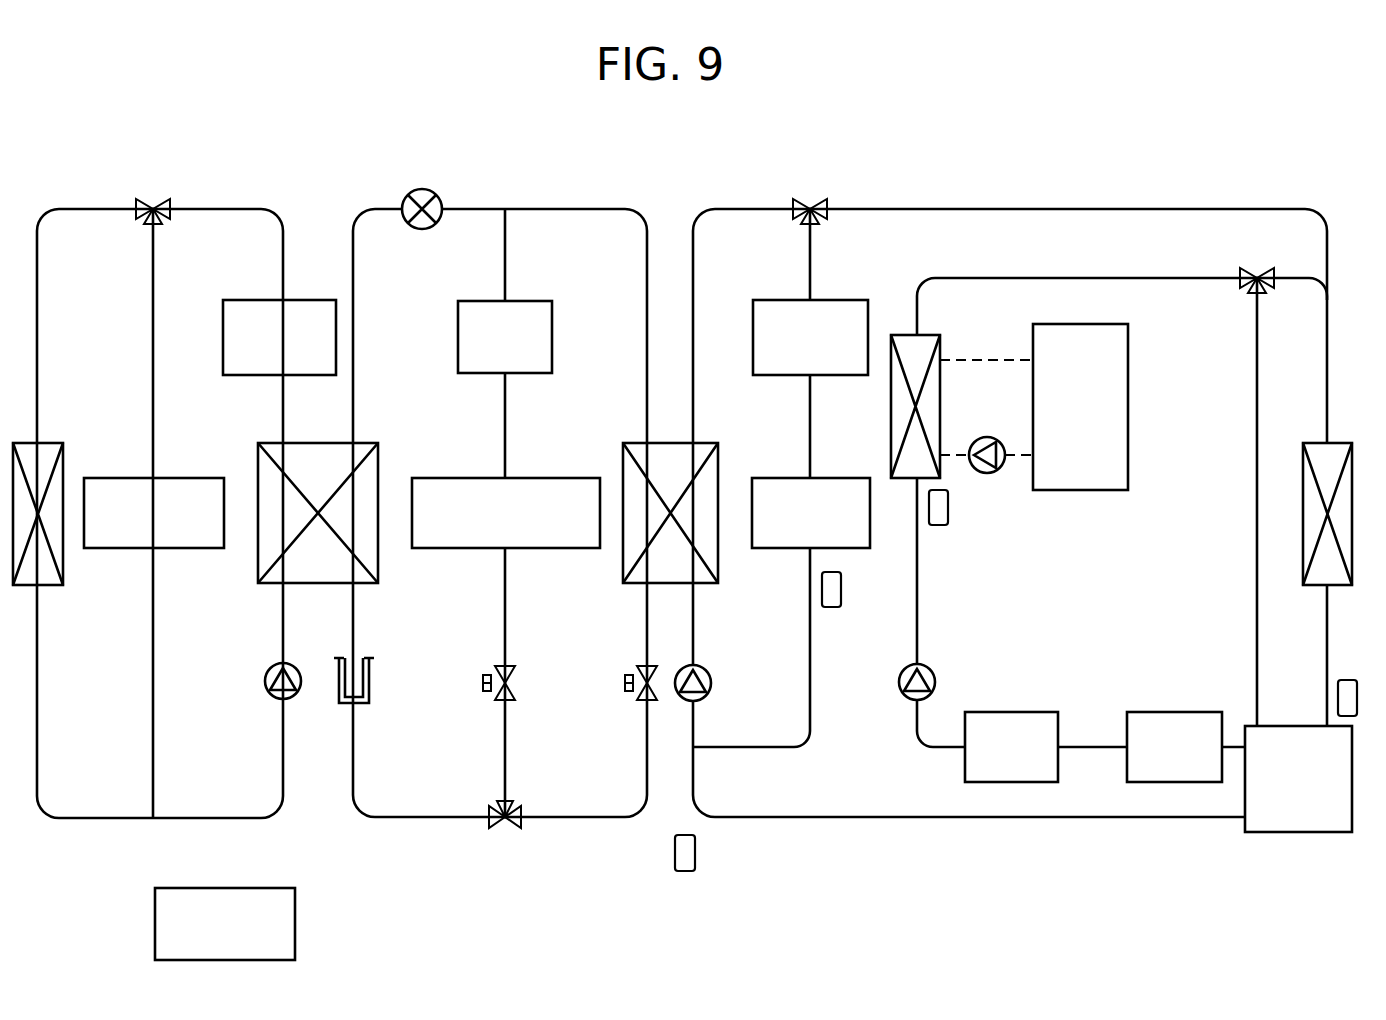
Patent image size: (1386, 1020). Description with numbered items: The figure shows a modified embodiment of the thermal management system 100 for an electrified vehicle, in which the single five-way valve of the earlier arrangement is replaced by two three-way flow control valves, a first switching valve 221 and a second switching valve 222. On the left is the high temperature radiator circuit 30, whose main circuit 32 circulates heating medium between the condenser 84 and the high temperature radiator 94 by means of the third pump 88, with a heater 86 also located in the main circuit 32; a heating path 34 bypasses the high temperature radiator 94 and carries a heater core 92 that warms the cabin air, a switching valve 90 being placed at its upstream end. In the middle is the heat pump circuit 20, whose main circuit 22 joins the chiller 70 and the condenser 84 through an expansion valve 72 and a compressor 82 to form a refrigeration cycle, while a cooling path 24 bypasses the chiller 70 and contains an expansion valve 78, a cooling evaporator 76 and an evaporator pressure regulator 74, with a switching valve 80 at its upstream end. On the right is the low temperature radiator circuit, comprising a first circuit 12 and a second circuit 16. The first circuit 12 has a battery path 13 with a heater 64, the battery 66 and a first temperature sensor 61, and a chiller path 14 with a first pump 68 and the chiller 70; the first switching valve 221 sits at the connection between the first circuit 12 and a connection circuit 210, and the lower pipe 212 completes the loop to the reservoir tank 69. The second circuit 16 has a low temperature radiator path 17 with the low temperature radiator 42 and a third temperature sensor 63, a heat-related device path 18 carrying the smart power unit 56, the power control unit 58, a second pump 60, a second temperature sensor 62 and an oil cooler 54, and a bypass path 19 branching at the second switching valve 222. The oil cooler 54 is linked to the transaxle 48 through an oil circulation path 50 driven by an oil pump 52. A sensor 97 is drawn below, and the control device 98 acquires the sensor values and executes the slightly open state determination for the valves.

The thermal management system 100 is at (1318, 72).
The first circuit 12 is at (1010, 492).
The battery path 13 is at (811, 428).
The chiller path 14 is at (694, 288).
The second circuit 16 is at (1122, 416).
The low temperature radiator path 17 is at (1327, 338).
The heat-related device path 18 is at (916, 576).
The bypass path 19 is at (1257, 446).
The heat pump circuit 20 is at (507, 457).
The main circuit 22 is at (656, 256).
The cooling path 24 is at (506, 428).
The high temperature radiator circuit 30 is at (167, 494).
The main circuit 32 is at (288, 240).
The heating path 34 is at (152, 345).
The low temperature radiator 42 is at (1314, 443).
The transaxle 48 is at (1085, 490).
The oil circulation path 50 is at (977, 360).
The oil pump 52 is at (990, 473).
The oil cooler 54 is at (906, 335).
The smart power unit 56 is at (1176, 712).
The power control unit 58 is at (1011, 712).
The second pump 60 is at (898, 680).
The first temperature sensor 61 is at (832, 607).
The second temperature sensor 62 is at (938, 525).
The third temperature sensor 63 is at (1348, 680).
The heater 64 is at (833, 300).
The battery 66 is at (776, 478).
The first pump 68 is at (712, 683).
The reservoir tank 69 is at (1300, 832).
The chiller 70 is at (677, 583).
The expansion valve 72 is at (635, 678).
The evaporator pressure regulator 74 is at (485, 301).
The cooling evaporator 76 is at (460, 478).
The expansion valve 78 is at (518, 689).
The switching valve 80 is at (500, 830).
The compressor 82 is at (423, 189).
The condenser 84 is at (331, 583).
The heater 86 is at (261, 300).
The third pump 88 is at (265, 680).
The switching valve 90 is at (151, 198).
The heater core 92 is at (133, 477).
The high temperature radiator 94 is at (45, 442).
The temperature sensor 97 is at (696, 862).
The control device 98 is at (296, 925).
The connection circuit 210 is at (992, 208).
The coolant pipe 212 is at (1011, 818).
The first switching valve 221 is at (808, 198).
The second switching valve 222 is at (1257, 266).